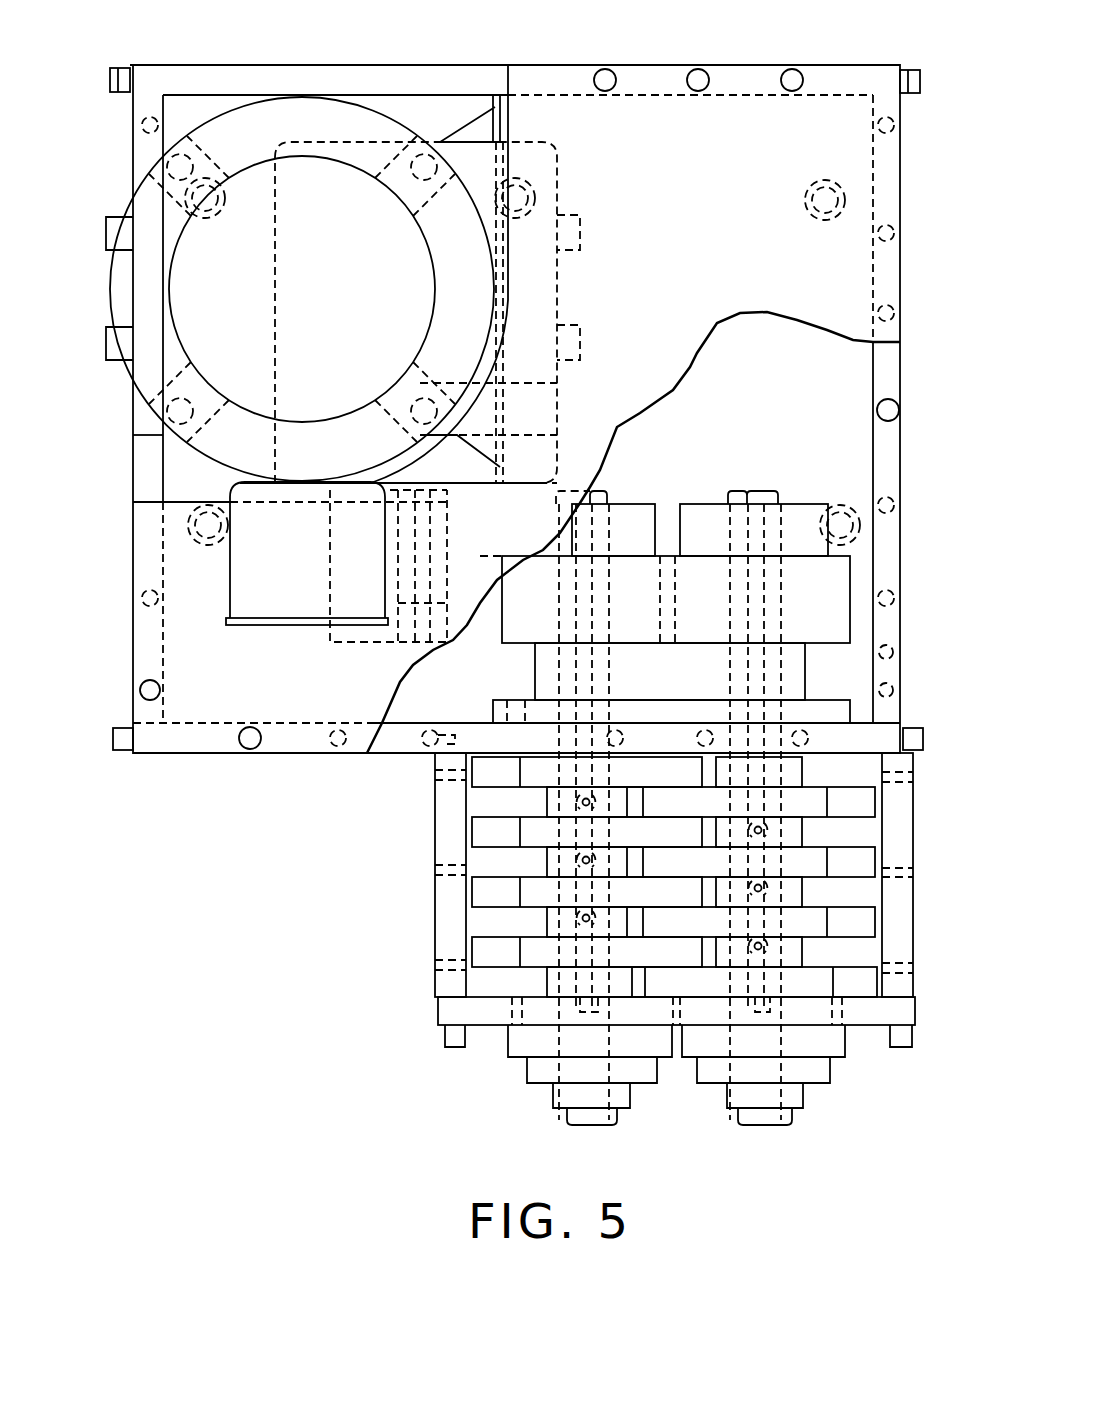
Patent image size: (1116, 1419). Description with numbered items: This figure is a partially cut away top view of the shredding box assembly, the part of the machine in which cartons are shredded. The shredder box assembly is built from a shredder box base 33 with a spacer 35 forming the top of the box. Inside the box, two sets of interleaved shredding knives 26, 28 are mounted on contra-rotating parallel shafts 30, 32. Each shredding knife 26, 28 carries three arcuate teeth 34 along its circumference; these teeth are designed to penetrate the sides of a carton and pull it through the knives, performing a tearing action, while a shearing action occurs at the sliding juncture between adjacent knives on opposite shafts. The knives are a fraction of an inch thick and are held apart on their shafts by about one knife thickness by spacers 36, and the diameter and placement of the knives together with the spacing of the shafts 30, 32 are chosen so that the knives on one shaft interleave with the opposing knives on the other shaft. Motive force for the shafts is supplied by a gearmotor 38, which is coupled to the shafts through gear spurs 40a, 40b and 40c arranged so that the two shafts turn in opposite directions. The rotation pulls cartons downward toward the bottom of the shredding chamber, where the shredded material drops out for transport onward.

The shredding knife 26 is at (488, 832).
The shredding knife 28 is at (857, 980).
The shaft 30 is at (592, 1125).
The shaft 32 is at (772, 1125).
The shredder box base 33 is at (823, 395).
The arcuate teeth 34 is at (518, 832).
The spacer 35 is at (798, 118).
The spacers 36 is at (550, 923).
The gearmotor 38 is at (133, 213).
The gear spur 40a is at (355, 642).
The gear spur 40b is at (620, 555).
The gear spur 40c is at (800, 555).